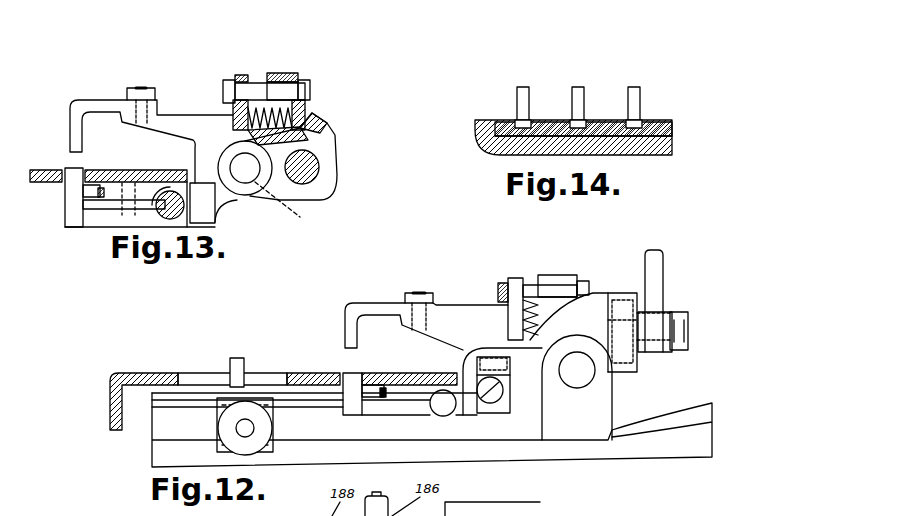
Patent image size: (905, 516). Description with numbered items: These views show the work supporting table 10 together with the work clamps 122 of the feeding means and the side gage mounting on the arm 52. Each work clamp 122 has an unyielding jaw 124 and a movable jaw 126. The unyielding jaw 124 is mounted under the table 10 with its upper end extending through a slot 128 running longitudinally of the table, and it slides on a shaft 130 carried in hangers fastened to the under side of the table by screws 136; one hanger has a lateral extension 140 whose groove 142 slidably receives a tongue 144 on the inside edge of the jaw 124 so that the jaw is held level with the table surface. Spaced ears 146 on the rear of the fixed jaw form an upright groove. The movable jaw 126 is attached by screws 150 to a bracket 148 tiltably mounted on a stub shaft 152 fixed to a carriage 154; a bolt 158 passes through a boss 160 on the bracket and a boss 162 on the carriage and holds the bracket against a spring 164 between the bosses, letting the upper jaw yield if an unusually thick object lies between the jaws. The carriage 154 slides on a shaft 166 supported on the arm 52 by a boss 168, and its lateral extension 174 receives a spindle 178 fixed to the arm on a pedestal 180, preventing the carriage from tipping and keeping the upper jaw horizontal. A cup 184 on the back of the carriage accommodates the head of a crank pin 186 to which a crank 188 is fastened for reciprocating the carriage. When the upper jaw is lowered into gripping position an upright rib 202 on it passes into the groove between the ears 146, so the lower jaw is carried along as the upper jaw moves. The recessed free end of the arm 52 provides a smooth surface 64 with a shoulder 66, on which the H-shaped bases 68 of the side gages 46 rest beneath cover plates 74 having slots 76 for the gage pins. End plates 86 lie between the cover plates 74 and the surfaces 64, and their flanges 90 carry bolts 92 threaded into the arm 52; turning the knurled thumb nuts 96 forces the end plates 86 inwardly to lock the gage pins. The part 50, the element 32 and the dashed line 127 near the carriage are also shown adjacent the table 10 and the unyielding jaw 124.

In FIG. 13, the table 10 is at (42, 170).
In FIG. 12, the table 10 is at (124, 373).
In FIG. 12, the end flange 32 is at (110, 405).
In FIG. 14, the side gages 46 is at (632, 88).
In FIG. 12, the side gages 46 is at (236, 358).
In FIG. 12, the bar section 50 is at (188, 373).
In FIG. 14, the arm 52 is at (628, 152).
In FIG. 12, the arm 52 is at (680, 405).
In FIG. 14, the smooth surfaces 64 is at (668, 150).
In FIG. 14, the shoulders 66 is at (492, 122).
In FIG. 14, the H-shaped bases 68 is at (485, 150).
In FIG. 14, the cover plates 74 is at (660, 122).
In FIG. 12, the cover plates 74 is at (150, 402).
In FIG. 14, the slots 76 is at (640, 128).
In FIG. 12, the end plates 86 is at (182, 408).
In FIG. 12, the flanges 90 is at (217, 440).
In FIG. 12, the bolts 92 is at (247, 430).
In FIG. 12, the knurled thumb nuts 96 is at (262, 416).
In FIG. 13, the work clamps 122 is at (66, 96).
In FIG. 12, the work clamps 122 is at (333, 339).
In FIG. 13, the unyielding jaw 124 is at (66, 170).
In FIG. 12, the unyielding jaw 124 is at (350, 373).
In FIG. 13, the movable jaw 126 is at (90, 100).
In FIG. 12, the movable jaw 126 is at (368, 303).
In FIG. 13, the pivot line 127 is at (297, 201).
In FIG. 13, the slot 128 is at (65, 183).
In FIG. 12, the slot 128 is at (322, 373).
In FIG. 13, the shaft 130 is at (190, 185).
In FIG. 12, the shaft 130 is at (440, 410).
In FIG. 13, the screws 136 is at (122, 170).
In FIG. 13, the lateral extension 140 is at (150, 182).
In FIG. 12, the lateral extension 140 is at (409, 379).
In FIG. 13, the groove 142 is at (100, 198).
In FIG. 12, the groove 142 is at (383, 398).
In FIG. 13, the tongue 144 is at (90, 197).
In FIG. 12, the tongue 144 is at (368, 398).
In FIG. 13, the spaced ears 146 is at (216, 226).
In FIG. 13, the bracket 148 is at (182, 115).
In FIG. 12, the bracket 148 is at (454, 315).
In FIG. 13, the screws 150 is at (150, 88).
In FIG. 12, the screws 150 is at (424, 293).
In FIG. 13, the stub shaft 152 is at (246, 183).
In FIG. 13, the carriage 154 is at (337, 145).
In FIG. 12, the carriage 154 is at (600, 293).
In FIG. 13, the bolt 158 is at (258, 83).
In FIG. 12, the bolt 158 is at (536, 285).
In FIG. 13, the boss 160 is at (232, 80).
In FIG. 12, the boss 160 is at (514, 278).
In FIG. 13, the boss 162 is at (290, 73).
In FIG. 12, the boss 162 is at (570, 278).
In FIG. 13, the spring 164 is at (300, 112).
In FIG. 12, the spring 164 is at (530, 318).
In FIG. 13, the shaft 166 is at (318, 178).
In FIG. 12, the shaft 166 is at (576, 388).
In FIG. 12, the boss 168 is at (614, 382).
In FIG. 12, the lateral extension 174 is at (512, 355).
In FIG. 12, the spindle 178 is at (488, 403).
In FIG. 12, the pedestal 180 is at (505, 385).
In FIG. 12, the cup 184 is at (637, 364).
In FIG. 12, the crank pin 186 is at (672, 316).
In FIG. 12, the crank 188 is at (665, 275).
In FIG. 13, the upright rib 202 is at (222, 214).